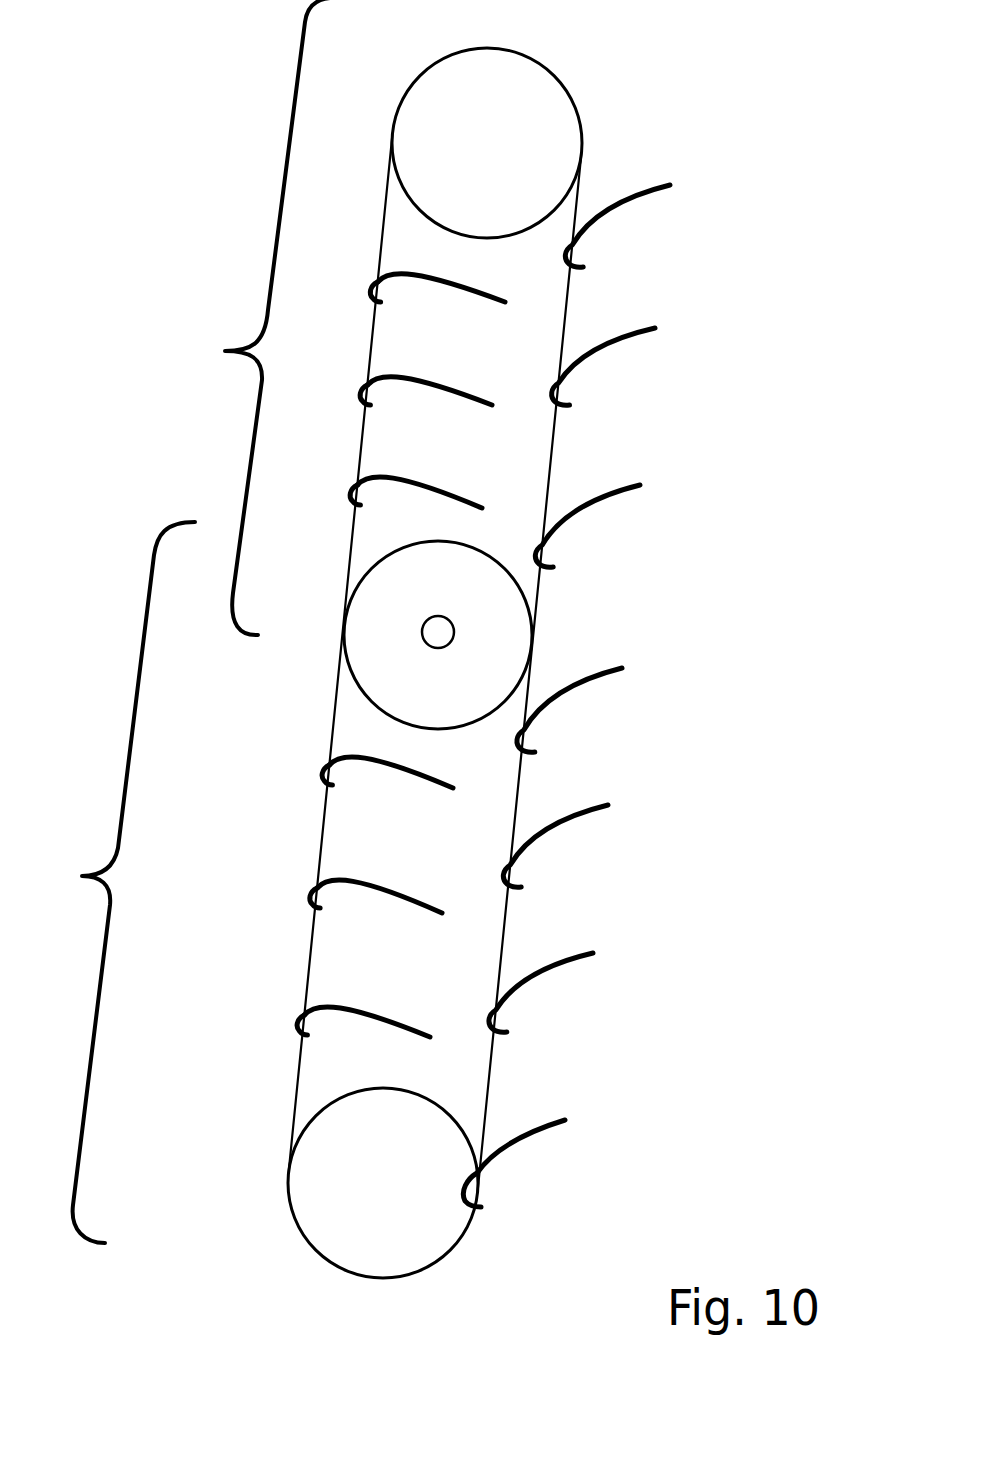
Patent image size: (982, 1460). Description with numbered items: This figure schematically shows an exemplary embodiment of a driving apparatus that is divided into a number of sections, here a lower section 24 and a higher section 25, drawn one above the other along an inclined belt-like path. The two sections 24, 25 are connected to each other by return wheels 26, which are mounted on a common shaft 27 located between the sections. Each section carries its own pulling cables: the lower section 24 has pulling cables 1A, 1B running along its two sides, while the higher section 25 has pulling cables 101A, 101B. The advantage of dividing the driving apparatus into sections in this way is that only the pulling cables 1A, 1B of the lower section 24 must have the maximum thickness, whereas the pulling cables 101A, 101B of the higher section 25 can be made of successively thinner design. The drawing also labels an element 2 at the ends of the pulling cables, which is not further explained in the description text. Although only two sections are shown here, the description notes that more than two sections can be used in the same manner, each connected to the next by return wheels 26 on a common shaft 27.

The pulling cable 101A is at (372, 343).
The pulling cable 101B is at (548, 480).
The pulling cable 1A is at (320, 835).
The pulling cable 1B is at (503, 958).
The finger hook end 2 is at (551, 830).
The lower section 24 is at (83, 876).
The higher section 25 is at (226, 351).
The return wheel 26 is at (447, 600).
The common shaft 27 is at (437, 648).